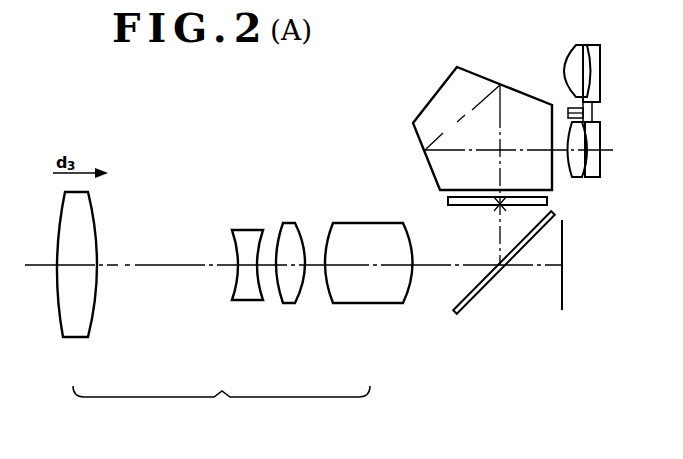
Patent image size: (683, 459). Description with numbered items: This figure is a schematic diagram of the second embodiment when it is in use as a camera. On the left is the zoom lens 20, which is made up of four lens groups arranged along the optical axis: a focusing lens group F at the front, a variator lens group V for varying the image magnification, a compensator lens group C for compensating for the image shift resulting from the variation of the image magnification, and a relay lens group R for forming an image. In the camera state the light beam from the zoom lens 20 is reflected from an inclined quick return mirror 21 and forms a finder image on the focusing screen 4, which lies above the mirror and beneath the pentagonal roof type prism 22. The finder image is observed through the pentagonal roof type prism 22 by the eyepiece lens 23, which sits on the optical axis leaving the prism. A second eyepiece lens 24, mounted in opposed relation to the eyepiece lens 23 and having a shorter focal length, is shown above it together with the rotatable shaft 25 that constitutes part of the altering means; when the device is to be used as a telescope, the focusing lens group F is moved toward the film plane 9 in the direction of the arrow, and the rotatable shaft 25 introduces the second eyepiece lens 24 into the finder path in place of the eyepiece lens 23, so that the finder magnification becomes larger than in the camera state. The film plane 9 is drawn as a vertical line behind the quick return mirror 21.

The focusing lens group F is at (70, 337).
The variator lens group V is at (243, 300).
The compensator lens group C is at (287, 303).
The relay lens group R is at (370, 303).
The zoom lens 20 is at (221, 408).
The quick return mirror 21 is at (483, 292).
The pentagonal roof type prism 22 is at (523, 108).
The eyepiece lens 23 is at (595, 130).
The second eyepiece lens 24 is at (595, 63).
The rotatable shaft 25 is at (568, 112).
The focusing screen 4 is at (538, 203).
The film plane 9 is at (562, 287).